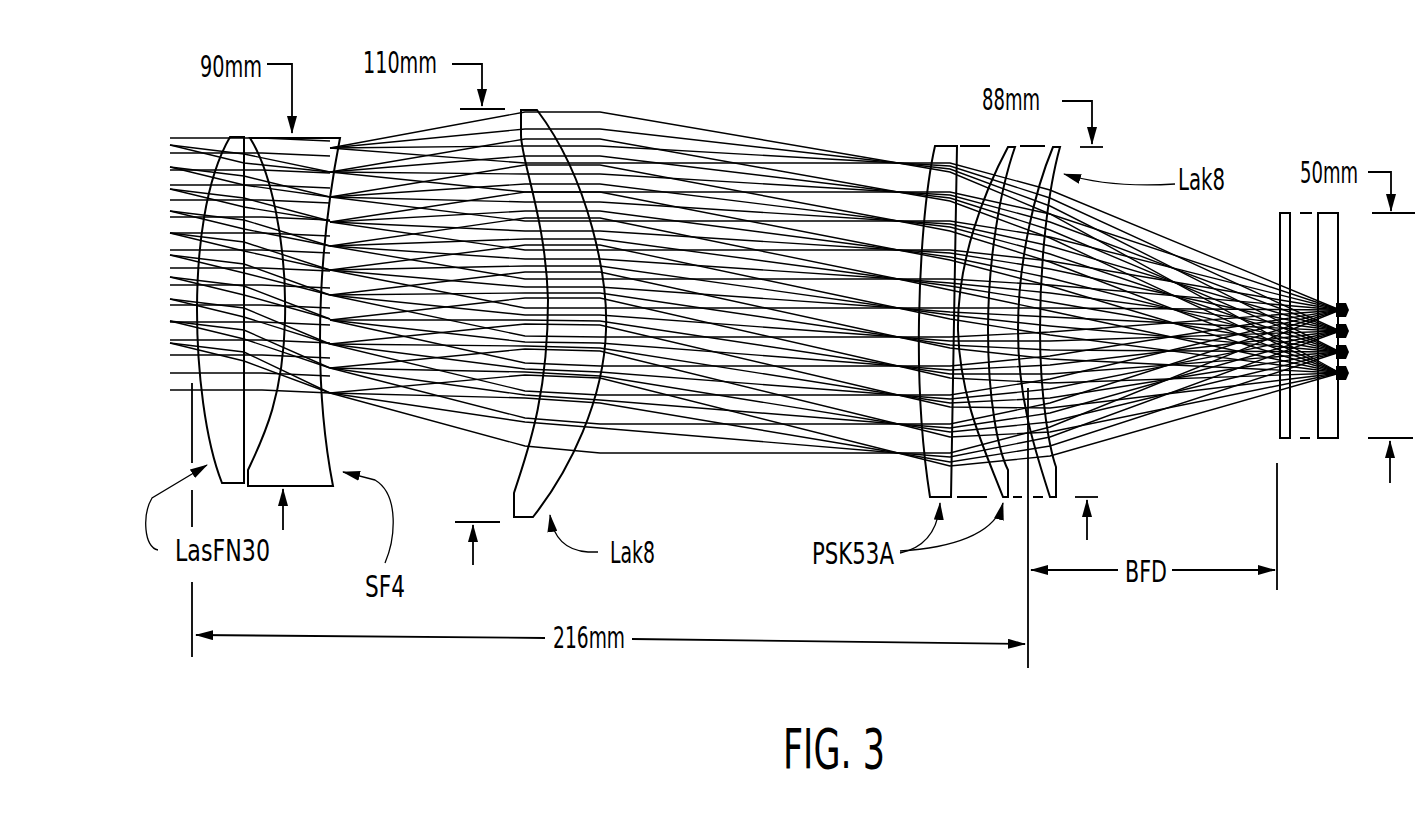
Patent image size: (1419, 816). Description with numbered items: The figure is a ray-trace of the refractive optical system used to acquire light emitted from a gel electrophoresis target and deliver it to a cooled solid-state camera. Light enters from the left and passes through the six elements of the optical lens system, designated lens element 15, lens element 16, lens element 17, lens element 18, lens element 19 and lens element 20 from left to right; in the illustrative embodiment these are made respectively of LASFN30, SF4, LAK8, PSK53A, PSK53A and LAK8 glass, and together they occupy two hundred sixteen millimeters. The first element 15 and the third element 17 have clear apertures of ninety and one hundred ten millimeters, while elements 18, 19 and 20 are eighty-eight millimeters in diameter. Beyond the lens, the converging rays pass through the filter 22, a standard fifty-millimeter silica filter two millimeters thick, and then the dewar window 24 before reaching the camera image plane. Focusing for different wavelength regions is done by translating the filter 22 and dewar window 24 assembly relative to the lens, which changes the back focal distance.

The lens element 15 is at (240, 133).
The lens element 16 is at (320, 143).
The lens element 17 is at (533, 107).
The lens element 18 is at (937, 152).
The lens element 19 is at (1010, 155).
The lens element 20 is at (1062, 157).
The filter 22 is at (1280, 440).
The dewar window 24 is at (1334, 440).